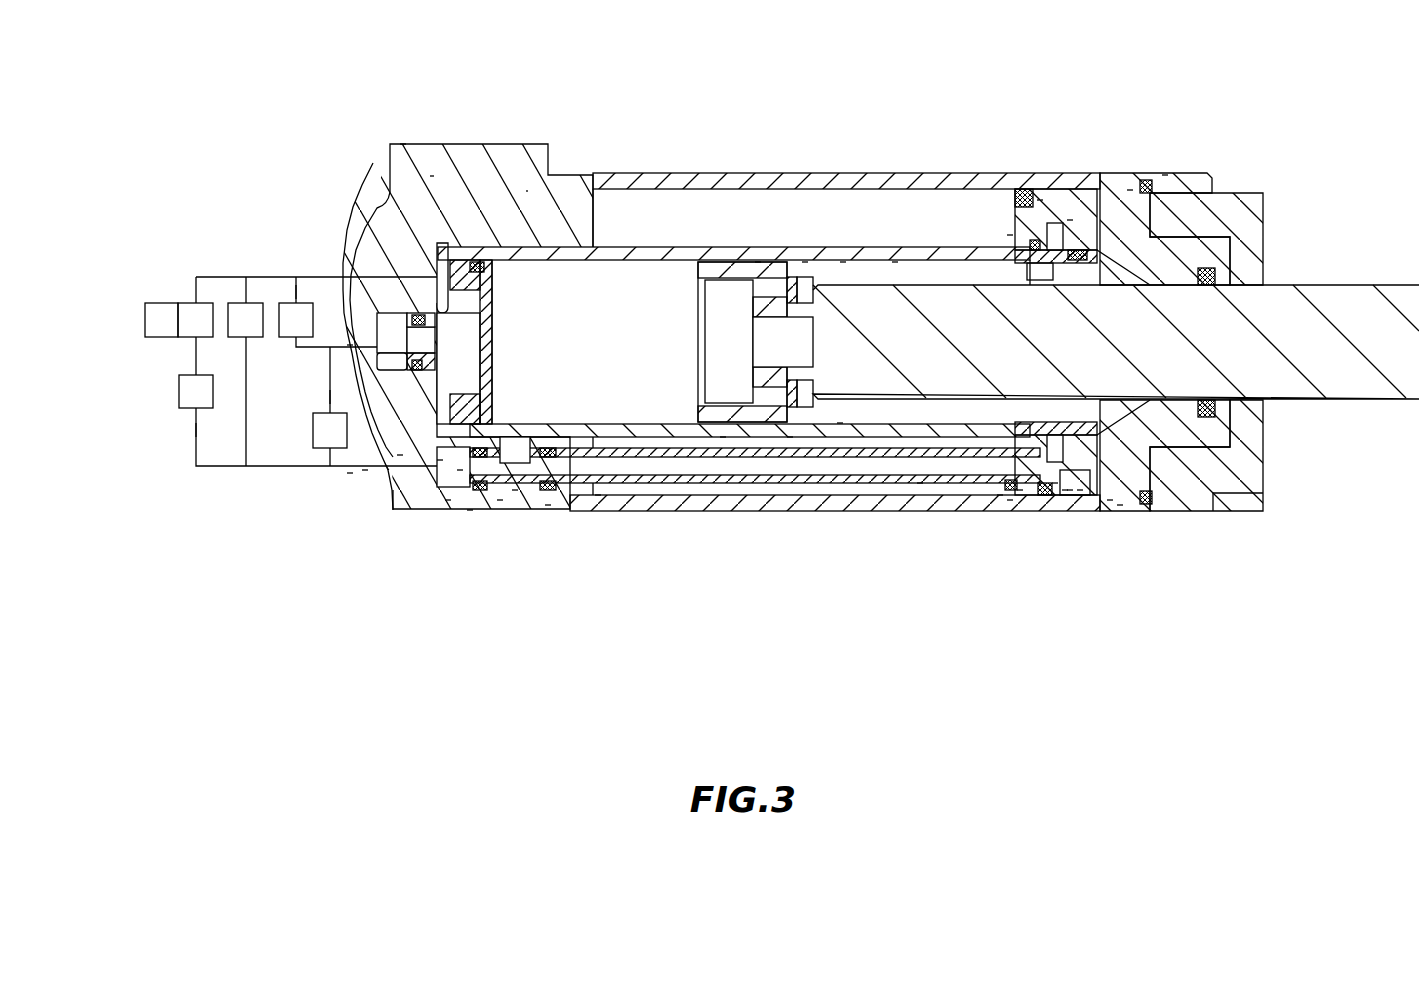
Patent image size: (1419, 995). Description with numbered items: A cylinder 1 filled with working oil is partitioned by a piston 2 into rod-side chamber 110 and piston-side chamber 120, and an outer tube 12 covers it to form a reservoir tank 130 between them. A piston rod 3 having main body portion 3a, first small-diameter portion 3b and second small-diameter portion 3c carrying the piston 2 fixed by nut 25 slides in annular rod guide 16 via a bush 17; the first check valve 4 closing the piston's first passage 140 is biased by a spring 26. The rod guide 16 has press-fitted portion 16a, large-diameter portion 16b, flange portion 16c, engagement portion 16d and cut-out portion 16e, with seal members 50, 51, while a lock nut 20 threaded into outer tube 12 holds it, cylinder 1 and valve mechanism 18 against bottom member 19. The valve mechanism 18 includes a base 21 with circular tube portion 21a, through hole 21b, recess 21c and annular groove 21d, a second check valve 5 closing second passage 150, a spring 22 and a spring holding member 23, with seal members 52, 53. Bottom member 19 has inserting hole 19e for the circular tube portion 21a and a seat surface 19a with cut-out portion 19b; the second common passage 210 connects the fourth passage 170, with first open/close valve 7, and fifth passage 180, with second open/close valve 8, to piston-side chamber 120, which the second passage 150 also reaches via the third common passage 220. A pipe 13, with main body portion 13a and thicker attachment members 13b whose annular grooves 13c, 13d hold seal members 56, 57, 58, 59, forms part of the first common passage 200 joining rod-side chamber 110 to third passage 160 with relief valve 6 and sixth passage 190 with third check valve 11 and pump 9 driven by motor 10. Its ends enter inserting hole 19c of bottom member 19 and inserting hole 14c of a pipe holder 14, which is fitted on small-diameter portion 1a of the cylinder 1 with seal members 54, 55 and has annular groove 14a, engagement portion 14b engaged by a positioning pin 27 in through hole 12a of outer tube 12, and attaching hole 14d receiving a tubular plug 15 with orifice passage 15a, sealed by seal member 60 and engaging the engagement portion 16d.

The cylinder 1 is at (628, 248).
The small-diameter portion 1a is at (1030, 247).
The piston 2 is at (740, 457).
The piston rod 3 is at (1352, 400).
The main body portion 3a is at (843, 262).
The first small-diameter portion 3b is at (805, 262).
The second small-diameter portion 3c is at (758, 262).
The first check valve 4 is at (812, 422).
The second check valve 5 is at (432, 176).
The relief valve 6 is at (250, 337).
The first open/close valve 7 is at (318, 466).
The second open/close valve 8 is at (290, 337).
The pump 9 is at (190, 303).
The motor 10 is at (150, 303).
The third check valve 11 is at (179, 392).
The outer tube 12 is at (712, 173).
The through hole 12a is at (1030, 185).
The pipe 13 is at (765, 483).
The main body portion 13a is at (680, 483).
The attachment members 13b is at (598, 495).
The annular groove 13c is at (500, 500).
The annular groove 13d is at (548, 505).
The pipe holder 14 is at (1095, 245).
The annular groove 14a is at (1070, 220).
The engagement portion 14b is at (1040, 200).
The inserting hole 14c is at (1055, 483).
The attaching hole 14d is at (1065, 490).
The plug 15 is at (1090, 500).
The orifice passage 15a is at (1070, 490).
The rod guide 16 is at (1235, 430).
The press-fitted portion 16a is at (1010, 500).
The large-diameter portion 16b is at (1130, 190).
The flange portion 16c is at (1165, 175).
The engagement portion 16d is at (1110, 500).
The cut-out portion 16e is at (1010, 235).
The bush 17 is at (1120, 505).
The valve mechanism 18 is at (393, 178).
The bottom member 19 is at (403, 144).
The seat surface 19a is at (460, 470).
The cut-out portion 19b is at (372, 200).
The inserting hole 19c is at (448, 500).
The inserting hole 19e is at (365, 470).
The lock nut 20 is at (1258, 512).
The base 21 is at (498, 278).
The circular tube portion 21a is at (400, 455).
The through hole 21b is at (440, 460).
The recess 21c is at (470, 510).
The annular groove 21d is at (515, 490).
The spring 22 is at (470, 245).
The spring holding member 23 is at (527, 190).
The nut 25 is at (722, 437).
The spring 26 is at (840, 423).
The positioning pin 27 is at (1030, 190).
The seal member 50 is at (1150, 185).
The seal member 51 is at (1210, 265).
The seal member 52 is at (483, 190).
The seal member 53 is at (415, 470).
The seal member 54 is at (1015, 190).
The seal member 55 is at (1085, 225).
The seal member 56 is at (1045, 495).
The seal member 57 is at (470, 480).
The seal member 58 is at (1010, 485).
The seal member 59 is at (540, 480).
The seal member 60 is at (1080, 490).
The rod-side chamber 110 is at (895, 262).
The piston-side chamber 120 is at (563, 262).
The reservoir tank 130 is at (667, 205).
The first passage 140 is at (790, 437).
The second passage 150 is at (413, 263).
The third passage 160 is at (313, 432).
The fourth passage 170 is at (330, 397).
The fifth passage 180 is at (292, 292).
The sixth passage 190 is at (196, 430).
The first common passage 200 is at (350, 473).
The second common passage 210 is at (350, 345).
The third common passage 220 is at (300, 277).